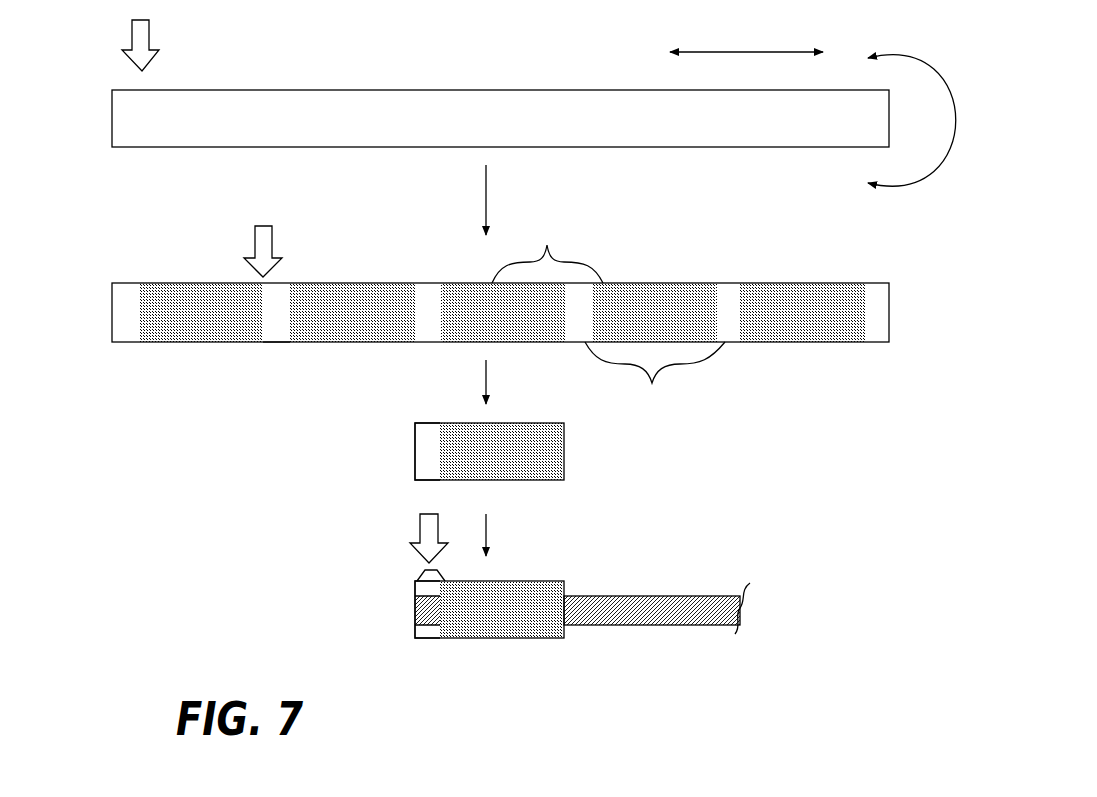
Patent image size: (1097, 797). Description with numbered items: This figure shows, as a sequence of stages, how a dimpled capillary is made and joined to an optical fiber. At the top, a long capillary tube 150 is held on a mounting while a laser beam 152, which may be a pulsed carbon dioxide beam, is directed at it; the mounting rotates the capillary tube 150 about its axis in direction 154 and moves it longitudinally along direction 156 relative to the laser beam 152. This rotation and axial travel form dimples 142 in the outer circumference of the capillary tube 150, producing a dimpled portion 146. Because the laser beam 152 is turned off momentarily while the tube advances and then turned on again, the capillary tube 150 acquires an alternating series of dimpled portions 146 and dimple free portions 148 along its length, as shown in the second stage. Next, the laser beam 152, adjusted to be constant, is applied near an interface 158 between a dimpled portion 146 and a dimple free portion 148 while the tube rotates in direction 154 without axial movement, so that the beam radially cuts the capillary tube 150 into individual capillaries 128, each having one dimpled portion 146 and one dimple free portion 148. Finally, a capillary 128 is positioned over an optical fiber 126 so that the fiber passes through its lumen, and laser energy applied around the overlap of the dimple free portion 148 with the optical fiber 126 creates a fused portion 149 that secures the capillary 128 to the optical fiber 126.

The optical fiber 126 is at (689, 596).
The capillary 128 is at (582, 452).
The dimple 142 is at (177, 294).
The dimpled portion 146 is at (578, 660).
The dimple free portion 148 is at (417, 666).
The fused portion 149 is at (436, 572).
The capillary tube 150 is at (106, 162).
The laser beam 152 is at (149, 42).
The direction 154 is at (941, 64).
The direction 156 is at (773, 51).
The interface 158 is at (262, 345).